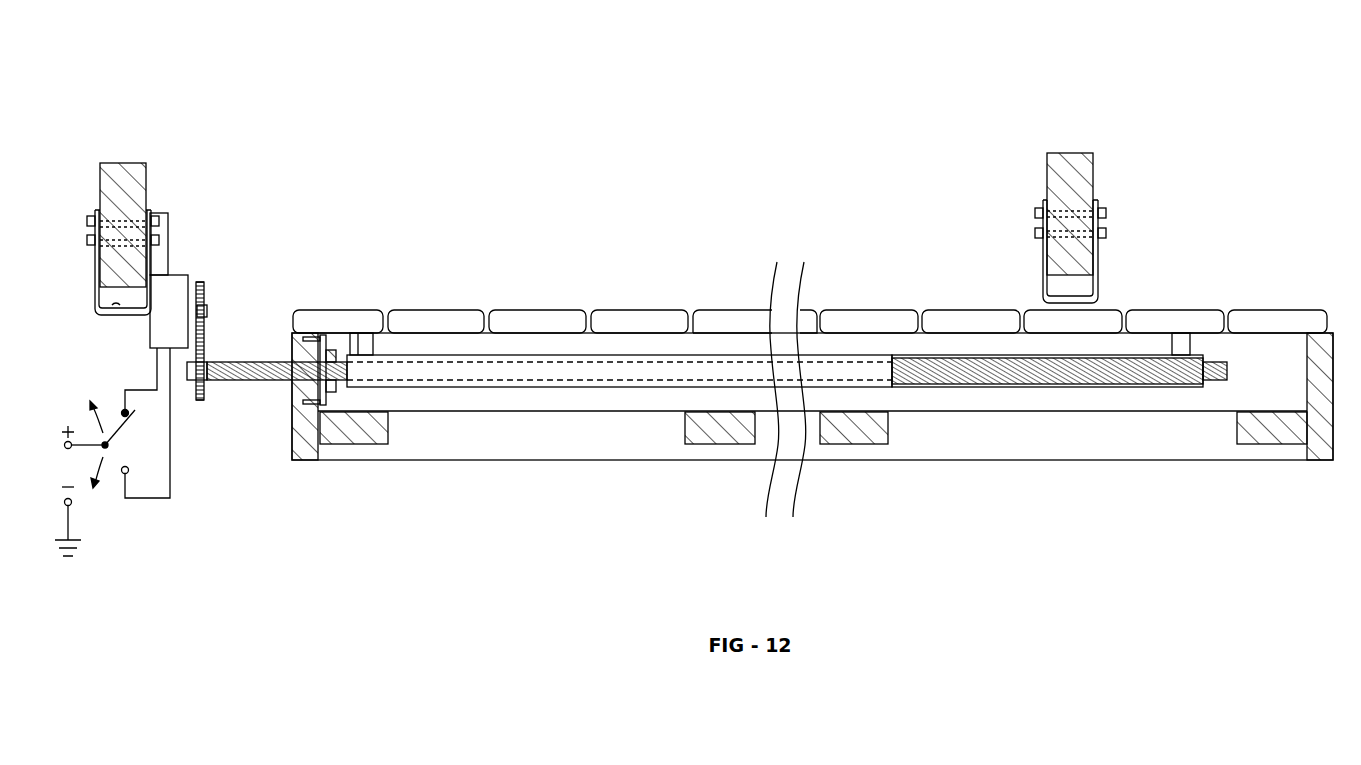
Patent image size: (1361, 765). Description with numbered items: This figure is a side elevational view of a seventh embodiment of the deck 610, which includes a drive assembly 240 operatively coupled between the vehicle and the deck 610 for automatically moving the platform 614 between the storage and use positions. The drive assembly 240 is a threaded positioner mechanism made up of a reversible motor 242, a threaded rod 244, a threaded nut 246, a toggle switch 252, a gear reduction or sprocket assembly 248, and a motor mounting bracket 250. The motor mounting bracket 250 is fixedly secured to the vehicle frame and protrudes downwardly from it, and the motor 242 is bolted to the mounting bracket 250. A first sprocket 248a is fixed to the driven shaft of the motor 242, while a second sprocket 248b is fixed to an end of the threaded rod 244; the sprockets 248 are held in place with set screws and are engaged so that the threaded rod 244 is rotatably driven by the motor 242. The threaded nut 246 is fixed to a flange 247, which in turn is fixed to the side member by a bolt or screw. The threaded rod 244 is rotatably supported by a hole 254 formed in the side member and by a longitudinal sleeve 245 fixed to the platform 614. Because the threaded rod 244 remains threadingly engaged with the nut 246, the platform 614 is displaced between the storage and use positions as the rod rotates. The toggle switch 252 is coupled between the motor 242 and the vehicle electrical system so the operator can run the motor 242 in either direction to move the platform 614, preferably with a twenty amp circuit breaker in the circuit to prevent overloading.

The drive assembly 240 is at (273, 214).
The reversible motor 242 is at (180, 285).
The threaded rod 244 is at (955, 388).
The longitudinal sleeve 245 is at (1085, 388).
The threaded nut 246 is at (336, 348).
The flange 247 is at (335, 399).
The sprocket assembly 248 is at (209, 314).
The first sprocket 248a is at (206, 285).
The second sprocket 248b is at (203, 402).
The motor mounting bracket 250 is at (114, 306).
The toggle switch 252 is at (141, 499).
The hole 254 is at (303, 437).
The deck 610 is at (981, 162).
The platform 614 is at (870, 322).